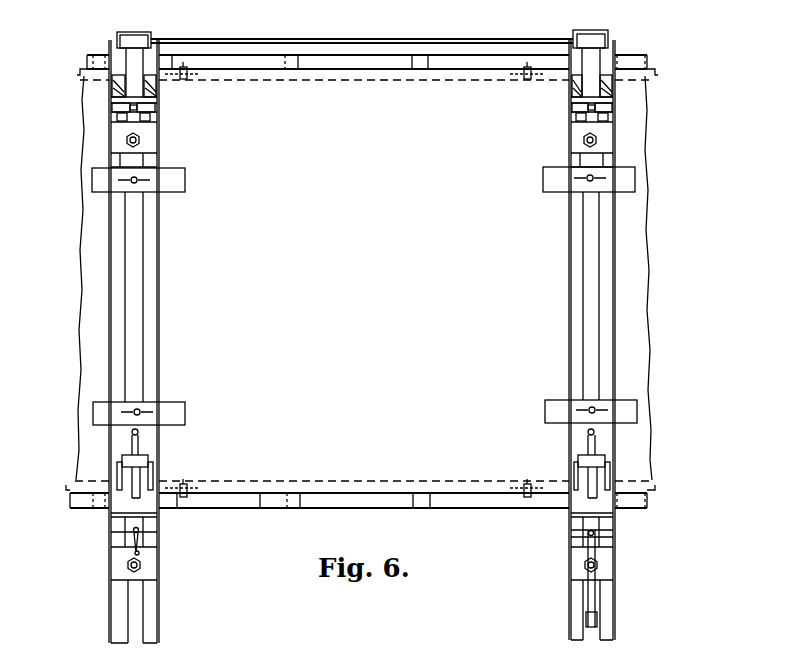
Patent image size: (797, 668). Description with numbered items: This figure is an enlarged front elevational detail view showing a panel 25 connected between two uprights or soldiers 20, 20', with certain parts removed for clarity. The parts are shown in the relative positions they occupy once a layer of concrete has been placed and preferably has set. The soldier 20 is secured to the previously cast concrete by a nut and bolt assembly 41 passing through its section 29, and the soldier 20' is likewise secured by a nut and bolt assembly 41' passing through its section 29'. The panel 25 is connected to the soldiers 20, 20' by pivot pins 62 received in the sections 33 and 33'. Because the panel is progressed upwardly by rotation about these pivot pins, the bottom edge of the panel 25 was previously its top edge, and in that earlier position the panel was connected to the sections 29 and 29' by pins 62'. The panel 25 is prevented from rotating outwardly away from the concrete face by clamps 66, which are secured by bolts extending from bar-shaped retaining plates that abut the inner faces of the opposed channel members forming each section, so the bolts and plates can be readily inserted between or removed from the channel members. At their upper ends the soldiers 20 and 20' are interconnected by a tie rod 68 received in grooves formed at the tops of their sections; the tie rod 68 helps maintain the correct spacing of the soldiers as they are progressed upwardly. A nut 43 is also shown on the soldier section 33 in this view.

The tie rod 68 is at (293, 40).
The pivot pin 62 is at (355, 89).
The pin 62' is at (355, 473).
The nut 43 is at (141, 139).
The clamp 66 is at (186, 181).
The section 33 is at (158, 337).
The section 33' is at (557, 335).
The panel 25 is at (245, 474).
The nut and bolt assembly 41 is at (161, 564).
The nut and bolt assembly 41' is at (555, 578).
The soldier 20 is at (157, 514).
The soldier 20' is at (563, 504).
The section 29 is at (157, 611).
The section 29' is at (565, 610).